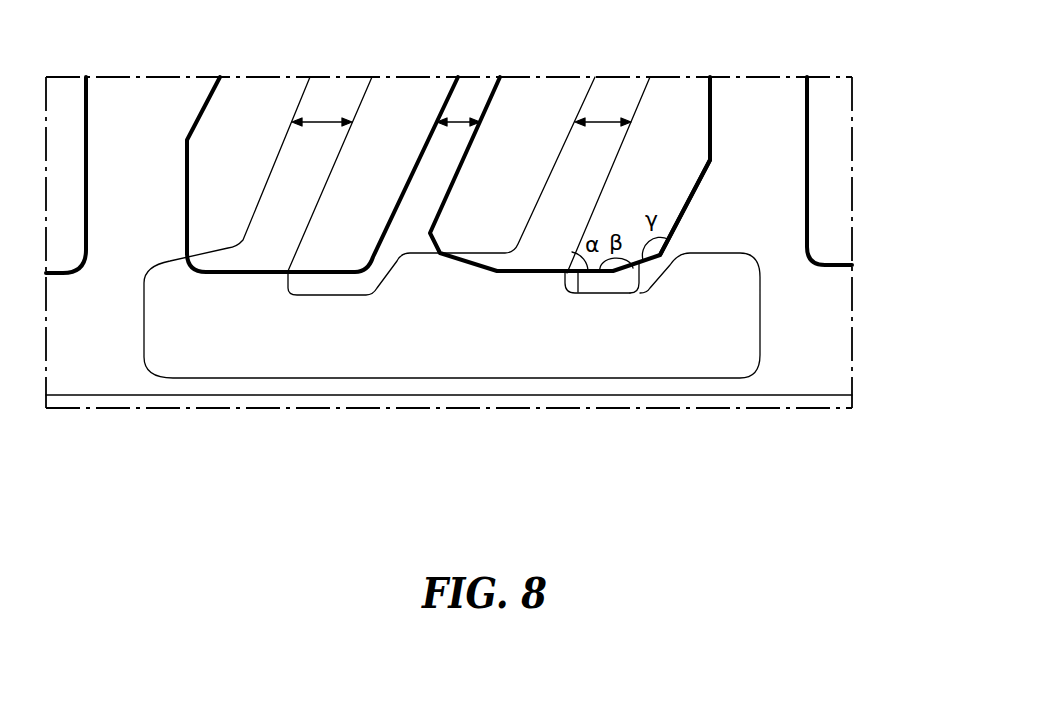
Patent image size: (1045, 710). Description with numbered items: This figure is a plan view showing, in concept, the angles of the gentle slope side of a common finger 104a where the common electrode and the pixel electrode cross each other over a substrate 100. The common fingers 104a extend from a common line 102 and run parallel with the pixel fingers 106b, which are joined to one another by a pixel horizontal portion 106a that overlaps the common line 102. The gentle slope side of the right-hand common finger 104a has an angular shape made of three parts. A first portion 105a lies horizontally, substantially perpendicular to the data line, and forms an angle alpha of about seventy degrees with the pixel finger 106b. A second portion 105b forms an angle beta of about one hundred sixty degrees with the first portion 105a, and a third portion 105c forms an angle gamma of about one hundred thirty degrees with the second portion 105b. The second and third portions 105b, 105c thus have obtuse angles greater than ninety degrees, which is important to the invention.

The substrate 100 is at (558, 409).
The common line 102 is at (767, 397).
The common finger 104a is at (458, 118).
The first portion 105a is at (568, 294).
The second portion 105b is at (637, 294).
The third portion 105c is at (686, 212).
The pixel horizontal portion 106a is at (650, 378).
The pixel finger 106b is at (321, 118).